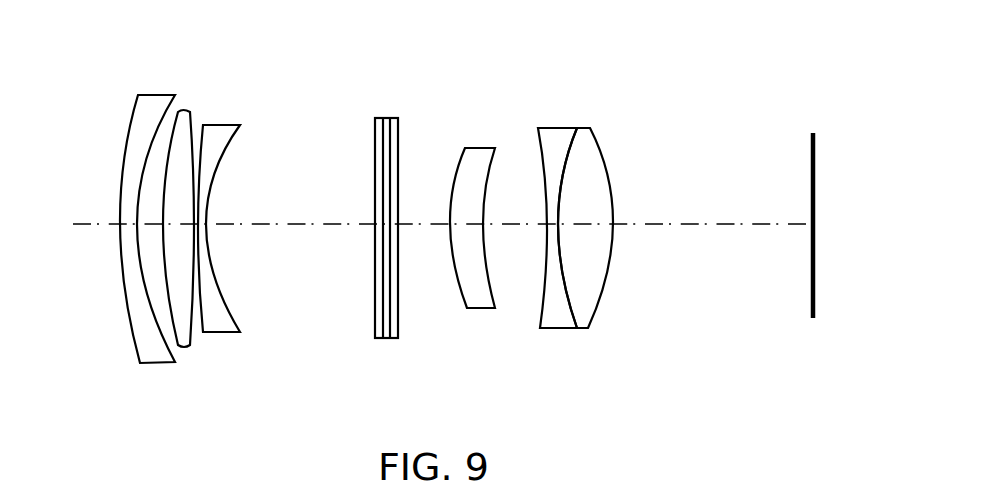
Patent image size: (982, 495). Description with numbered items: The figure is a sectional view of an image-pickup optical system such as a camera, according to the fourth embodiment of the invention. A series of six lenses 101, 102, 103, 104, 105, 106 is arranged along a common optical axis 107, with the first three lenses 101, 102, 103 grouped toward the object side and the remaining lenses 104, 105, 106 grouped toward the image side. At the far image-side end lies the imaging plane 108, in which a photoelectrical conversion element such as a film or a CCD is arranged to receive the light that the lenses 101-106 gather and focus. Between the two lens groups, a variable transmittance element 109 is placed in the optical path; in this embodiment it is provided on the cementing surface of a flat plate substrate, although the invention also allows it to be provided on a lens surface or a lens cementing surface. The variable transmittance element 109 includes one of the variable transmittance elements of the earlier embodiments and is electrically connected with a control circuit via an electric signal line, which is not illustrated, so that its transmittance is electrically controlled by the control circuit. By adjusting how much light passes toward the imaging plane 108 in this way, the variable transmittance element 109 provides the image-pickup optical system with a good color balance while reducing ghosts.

The lens 101 is at (161, 93).
The lens 102 is at (191, 111).
The lens 103 is at (228, 125).
The lens 104 is at (486, 149).
The lens 105 is at (553, 138).
The lens 106 is at (578, 143).
The optical axis 107 is at (86, 224).
The imaging plane 108 is at (815, 152).
The variable transmittance element 109 is at (390, 338).